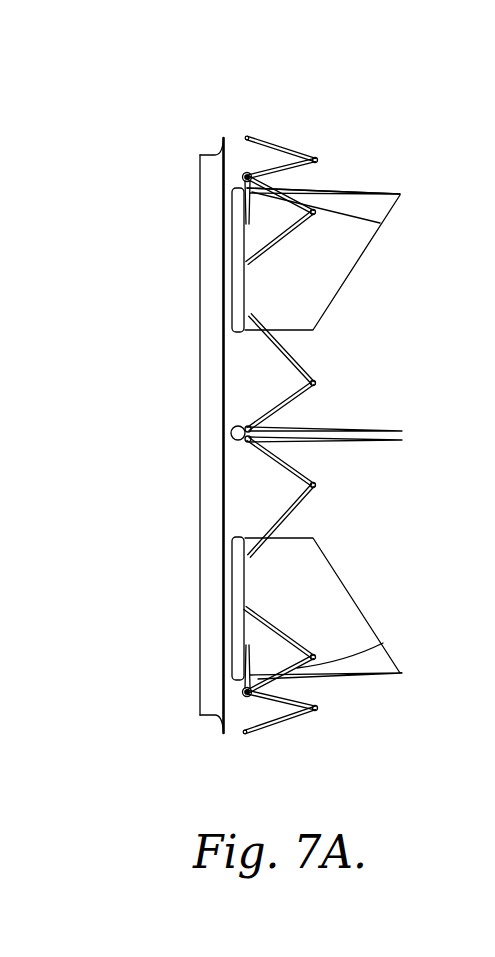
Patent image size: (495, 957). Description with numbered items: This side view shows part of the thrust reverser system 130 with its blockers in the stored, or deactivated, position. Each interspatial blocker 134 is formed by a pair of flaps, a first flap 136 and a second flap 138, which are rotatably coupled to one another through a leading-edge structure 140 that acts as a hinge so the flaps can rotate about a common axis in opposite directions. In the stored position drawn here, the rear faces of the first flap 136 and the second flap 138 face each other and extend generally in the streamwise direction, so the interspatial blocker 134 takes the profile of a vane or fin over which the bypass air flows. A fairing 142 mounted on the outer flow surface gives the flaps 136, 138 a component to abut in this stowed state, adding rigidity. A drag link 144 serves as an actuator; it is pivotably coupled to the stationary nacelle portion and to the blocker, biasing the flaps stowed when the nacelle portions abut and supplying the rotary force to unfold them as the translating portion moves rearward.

The thrust reverser system 130 is at (187, 103).
The interspatial blocker 134 is at (233, 208).
The first flap 136 is at (308, 288).
The second flap 138 is at (337, 190).
The leading-edge structure 140 is at (240, 265).
The fairing 142 is at (378, 210).
The drag link 144 is at (262, 140).